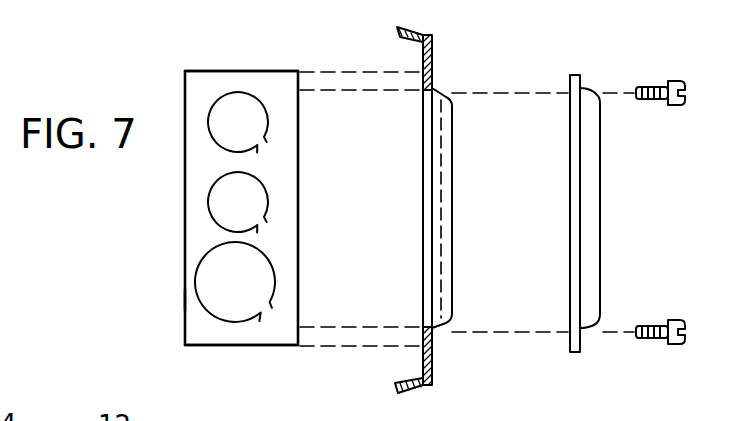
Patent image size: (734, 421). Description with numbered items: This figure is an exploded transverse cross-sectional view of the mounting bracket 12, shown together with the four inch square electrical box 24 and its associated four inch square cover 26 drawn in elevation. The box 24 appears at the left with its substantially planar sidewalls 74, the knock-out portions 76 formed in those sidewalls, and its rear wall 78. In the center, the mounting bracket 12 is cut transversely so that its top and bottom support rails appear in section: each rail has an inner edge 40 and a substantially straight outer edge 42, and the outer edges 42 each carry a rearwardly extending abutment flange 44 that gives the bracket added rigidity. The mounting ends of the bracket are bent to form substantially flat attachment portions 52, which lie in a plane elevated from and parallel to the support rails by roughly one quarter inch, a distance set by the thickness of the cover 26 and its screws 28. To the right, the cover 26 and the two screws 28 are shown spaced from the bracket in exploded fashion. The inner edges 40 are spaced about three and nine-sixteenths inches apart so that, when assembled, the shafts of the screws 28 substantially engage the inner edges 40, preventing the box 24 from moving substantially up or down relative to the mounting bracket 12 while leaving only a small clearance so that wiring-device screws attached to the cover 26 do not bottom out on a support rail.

The mounting bracket 12 is at (428, 209).
The 4 inch square electrical box 24 is at (176, 257).
The 4 inch square cover 26 is at (612, 226).
The screws 28 is at (656, 84).
The inner edges 40 is at (423, 108).
The outer edge 42 is at (422, 42).
The abutment flange 44 is at (416, 24).
The attachment portion 52 is at (452, 215).
The sidewalls 74 is at (214, 71).
The knock-out portions 76 is at (213, 140).
The rear wall 78 is at (185, 298).